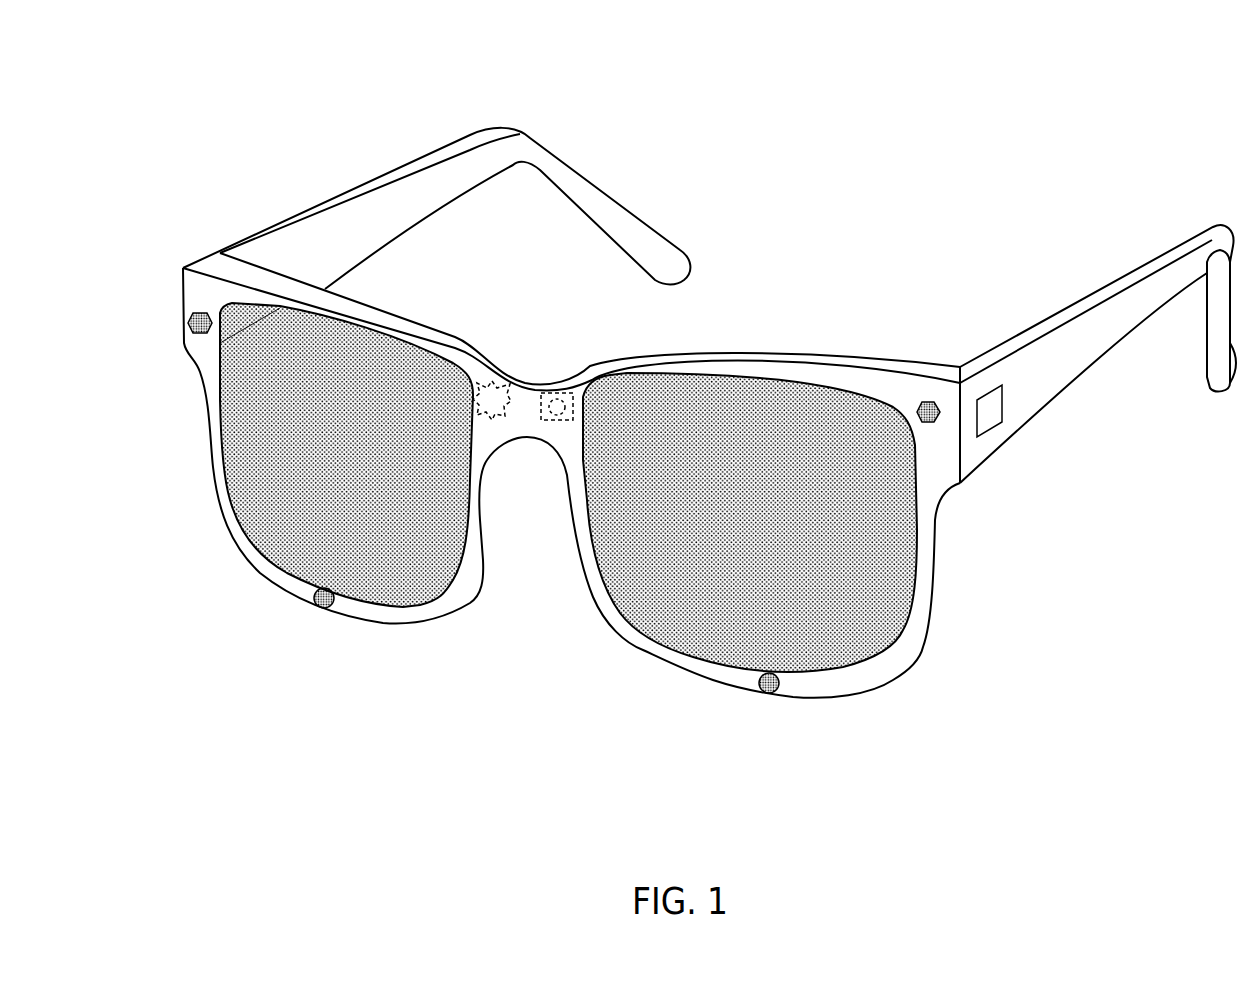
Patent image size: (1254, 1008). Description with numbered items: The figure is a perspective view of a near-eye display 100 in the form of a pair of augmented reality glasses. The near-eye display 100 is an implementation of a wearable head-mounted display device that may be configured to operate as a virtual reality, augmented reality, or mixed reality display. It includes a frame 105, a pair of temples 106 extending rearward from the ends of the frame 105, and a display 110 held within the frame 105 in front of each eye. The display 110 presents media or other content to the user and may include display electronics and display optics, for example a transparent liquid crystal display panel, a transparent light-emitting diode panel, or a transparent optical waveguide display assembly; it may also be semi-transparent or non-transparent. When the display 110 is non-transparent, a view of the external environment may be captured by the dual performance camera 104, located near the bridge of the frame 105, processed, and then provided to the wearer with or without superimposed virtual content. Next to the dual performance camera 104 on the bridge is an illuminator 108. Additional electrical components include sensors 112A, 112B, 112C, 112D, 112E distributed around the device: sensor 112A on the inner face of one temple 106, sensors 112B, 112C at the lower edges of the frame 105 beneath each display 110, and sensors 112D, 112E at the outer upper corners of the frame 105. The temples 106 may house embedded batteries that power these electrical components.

The near-eye display 100 is at (601, 29).
The dual performance camera 104 is at (563, 395).
The frame 105 is at (767, 355).
The temples 106 is at (1037, 262).
The illuminator(s) 108 is at (492, 383).
The display 110 is at (290, 538).
The sensor 112A is at (992, 417).
The sensor 112B is at (769, 692).
The sensor 112C is at (327, 607).
The sensor 112D is at (187, 316).
The sensor 112E is at (930, 400).